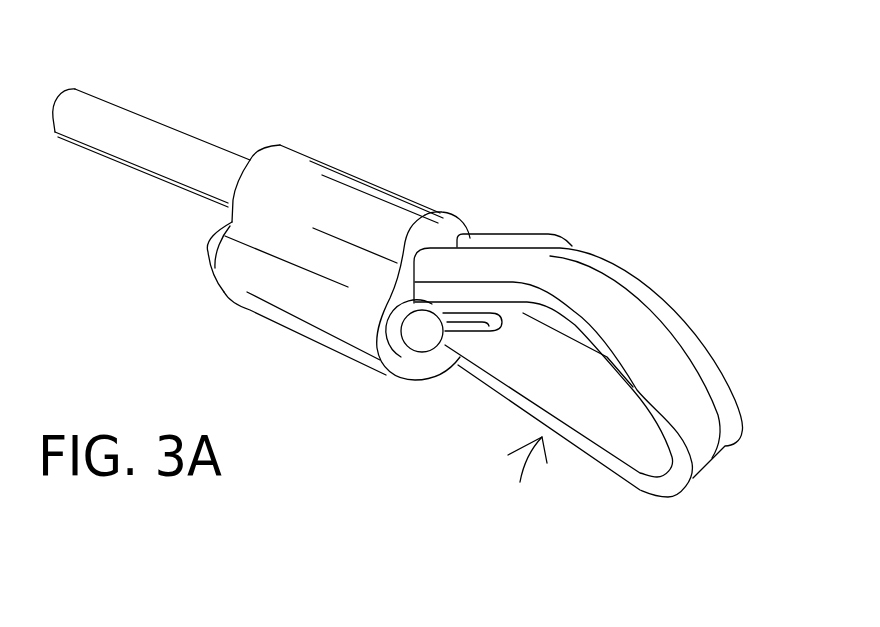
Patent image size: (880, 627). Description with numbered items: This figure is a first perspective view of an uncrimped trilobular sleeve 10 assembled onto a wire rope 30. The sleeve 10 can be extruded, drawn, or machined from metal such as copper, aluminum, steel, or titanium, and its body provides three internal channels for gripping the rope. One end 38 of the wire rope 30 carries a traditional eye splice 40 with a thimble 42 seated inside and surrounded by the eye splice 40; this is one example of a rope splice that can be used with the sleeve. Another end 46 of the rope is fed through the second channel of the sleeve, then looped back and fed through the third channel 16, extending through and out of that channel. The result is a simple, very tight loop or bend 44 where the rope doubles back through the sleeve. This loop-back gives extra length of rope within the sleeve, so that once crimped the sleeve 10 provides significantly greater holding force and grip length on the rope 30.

The sleeve 10 is at (357, 168).
The wire rope 30 is at (133, 122).
The loop or bend 44 is at (207, 250).
The third channel 16 is at (397, 378).
The end of the rope 46 is at (423, 342).
The thimble 42 is at (617, 270).
The eye splice 40 is at (640, 340).
The one end of the wire rope 38 is at (509, 496).